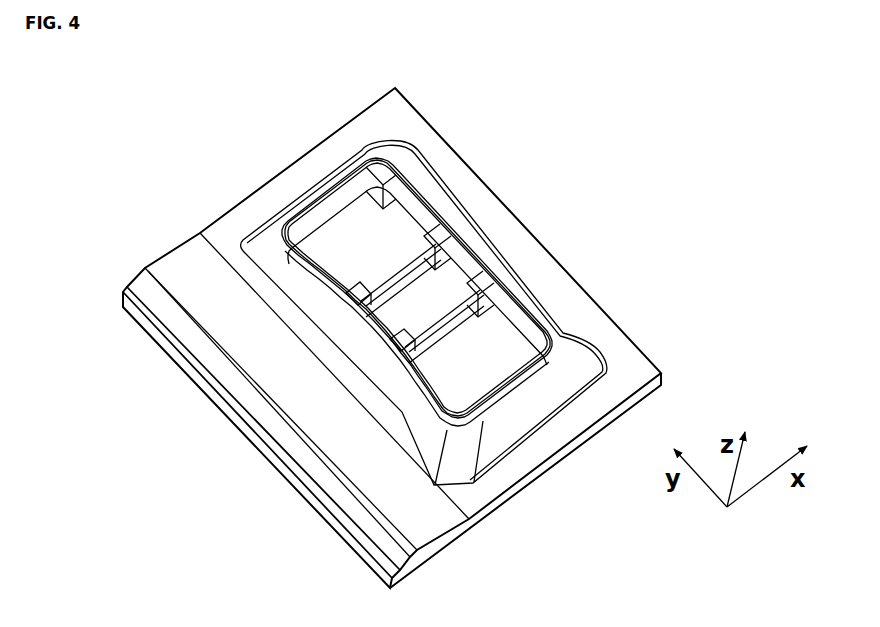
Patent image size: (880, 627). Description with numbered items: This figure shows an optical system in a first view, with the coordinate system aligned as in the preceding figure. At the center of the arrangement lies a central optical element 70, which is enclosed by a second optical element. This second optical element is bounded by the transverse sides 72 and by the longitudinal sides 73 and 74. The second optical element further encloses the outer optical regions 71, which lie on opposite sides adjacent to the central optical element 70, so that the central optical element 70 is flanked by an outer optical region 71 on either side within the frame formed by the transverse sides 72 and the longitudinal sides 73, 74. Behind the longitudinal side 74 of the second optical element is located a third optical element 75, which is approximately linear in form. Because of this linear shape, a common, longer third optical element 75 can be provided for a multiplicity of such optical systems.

The central optical element 70 is at (427, 297).
The outer optical regions 71 is at (374, 231).
The transverse sides 72 is at (312, 190).
The longitudinal side 73 is at (560, 330).
The longitudinal side 74 is at (370, 358).
The third optical element 75 is at (428, 512).